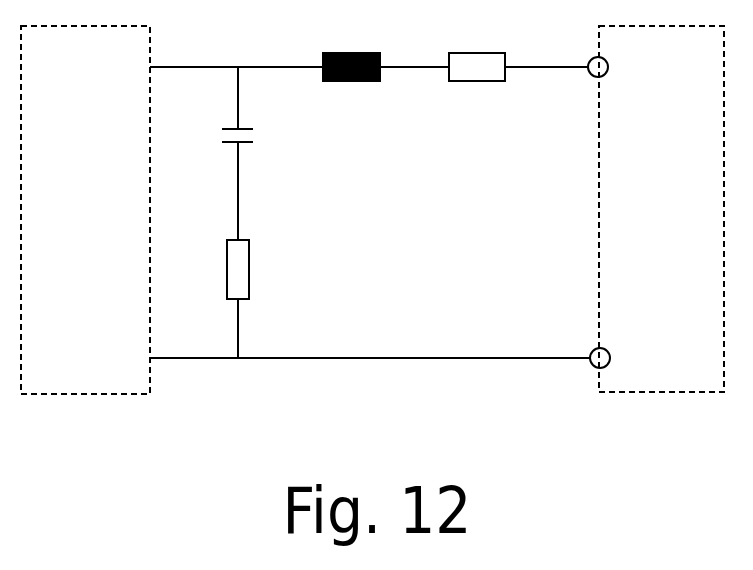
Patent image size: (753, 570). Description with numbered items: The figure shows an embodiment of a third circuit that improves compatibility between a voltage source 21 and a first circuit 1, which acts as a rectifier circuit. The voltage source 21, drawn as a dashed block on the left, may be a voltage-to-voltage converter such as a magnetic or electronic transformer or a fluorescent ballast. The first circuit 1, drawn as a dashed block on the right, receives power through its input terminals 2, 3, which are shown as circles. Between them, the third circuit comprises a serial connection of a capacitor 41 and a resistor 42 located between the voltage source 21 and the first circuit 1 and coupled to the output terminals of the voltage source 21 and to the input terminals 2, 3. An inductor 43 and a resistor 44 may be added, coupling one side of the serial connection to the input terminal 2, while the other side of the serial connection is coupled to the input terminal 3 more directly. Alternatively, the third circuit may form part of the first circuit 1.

The first circuit 1 is at (661, 230).
The input terminal 2 is at (588, 52).
The input terminal 3 is at (589, 372).
The voltage source 21 is at (85, 233).
The capacitor 41 is at (256, 137).
The resistor 42 is at (259, 269).
The inductor 43 is at (351, 49).
The resistor 44 is at (477, 49).